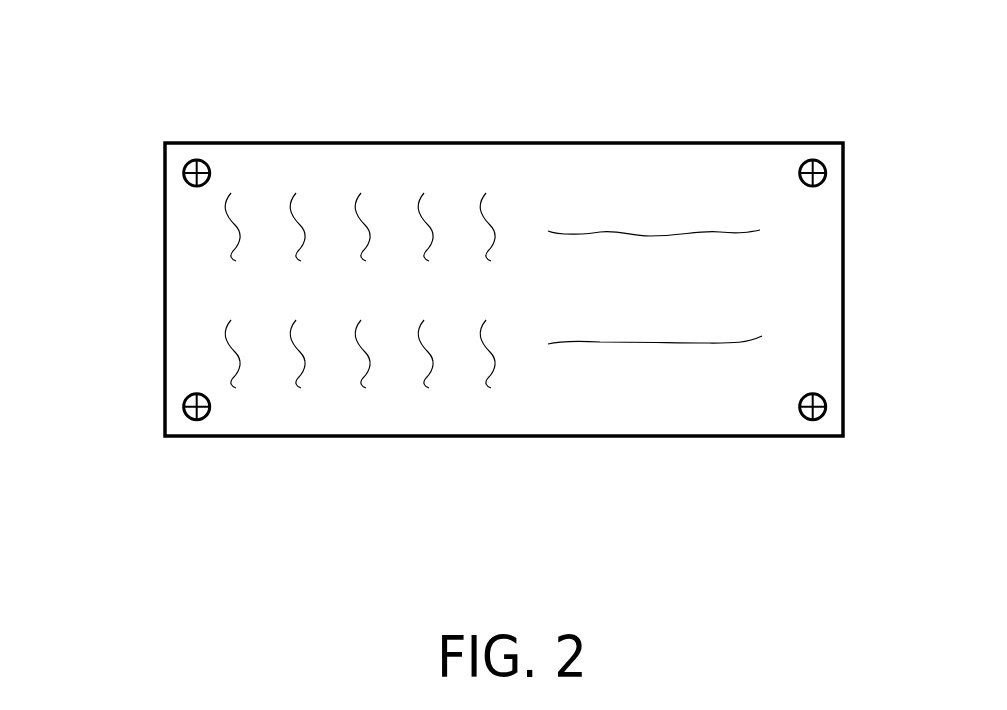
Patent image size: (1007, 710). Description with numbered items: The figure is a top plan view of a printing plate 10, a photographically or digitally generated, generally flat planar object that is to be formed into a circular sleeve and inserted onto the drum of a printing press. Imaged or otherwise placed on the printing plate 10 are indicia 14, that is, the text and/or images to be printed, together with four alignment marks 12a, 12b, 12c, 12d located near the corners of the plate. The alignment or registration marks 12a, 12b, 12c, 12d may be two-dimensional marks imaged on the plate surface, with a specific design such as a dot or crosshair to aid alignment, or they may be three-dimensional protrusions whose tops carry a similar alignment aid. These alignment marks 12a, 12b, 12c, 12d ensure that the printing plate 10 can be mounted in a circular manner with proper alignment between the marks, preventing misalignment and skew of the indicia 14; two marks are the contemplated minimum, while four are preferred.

The printing plate 10 is at (477, 143).
The alignment mark 12a is at (817, 160).
The alignment mark 12b is at (822, 418).
The alignment mark 12c is at (205, 418).
The alignment mark 12d is at (186, 164).
The indicia 14 is at (381, 310).